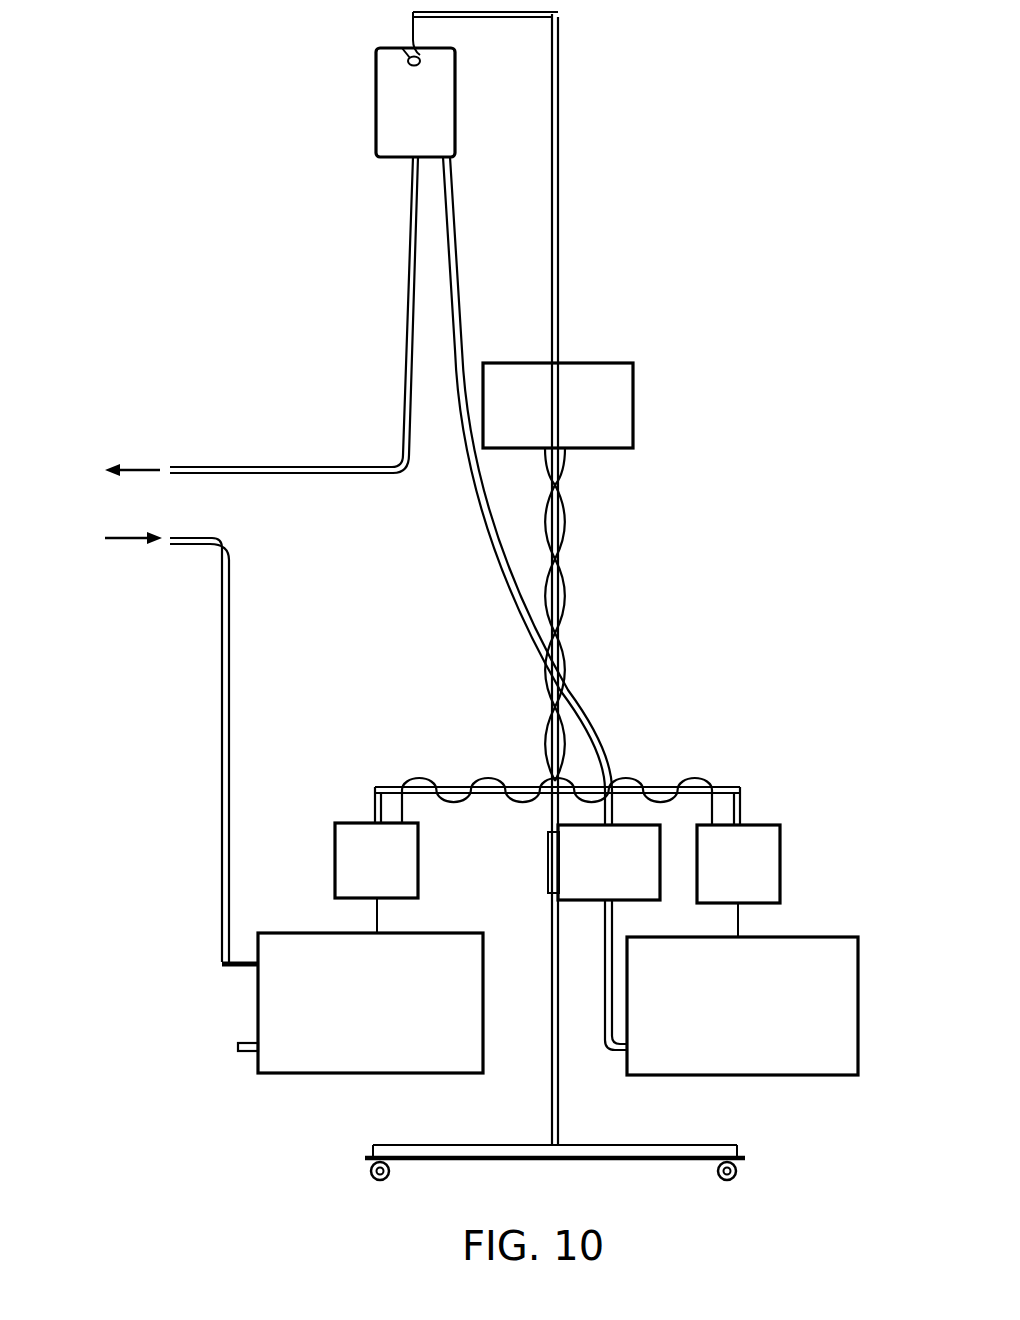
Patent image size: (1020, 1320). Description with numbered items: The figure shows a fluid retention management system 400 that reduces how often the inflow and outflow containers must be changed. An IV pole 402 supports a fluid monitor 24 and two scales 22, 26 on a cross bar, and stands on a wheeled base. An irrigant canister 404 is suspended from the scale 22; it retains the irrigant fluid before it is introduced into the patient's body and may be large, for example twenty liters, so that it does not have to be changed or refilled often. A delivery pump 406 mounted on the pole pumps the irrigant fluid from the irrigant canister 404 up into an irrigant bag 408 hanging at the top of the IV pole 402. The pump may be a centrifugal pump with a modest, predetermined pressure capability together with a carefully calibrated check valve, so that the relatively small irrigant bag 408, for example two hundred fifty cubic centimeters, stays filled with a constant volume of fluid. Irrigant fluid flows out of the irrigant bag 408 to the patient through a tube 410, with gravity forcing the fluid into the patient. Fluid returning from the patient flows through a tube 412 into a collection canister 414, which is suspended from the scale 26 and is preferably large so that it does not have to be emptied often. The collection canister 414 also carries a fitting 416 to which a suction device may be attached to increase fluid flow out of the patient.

The fluid retention management system 400 is at (832, 254).
The IV pole 402 is at (558, 1106).
The irrigant bag 408 is at (376, 117).
The tube 410 is at (246, 467).
The tube 412 is at (230, 651).
The fluid monitor 24 is at (610, 362).
The scale 26 is at (352, 823).
The delivery pump 406 is at (550, 855).
The scale 22 is at (767, 824).
The collection canister 414 is at (258, 1006).
The fitting 416 is at (240, 1052).
The irrigant canister 404 is at (843, 937).